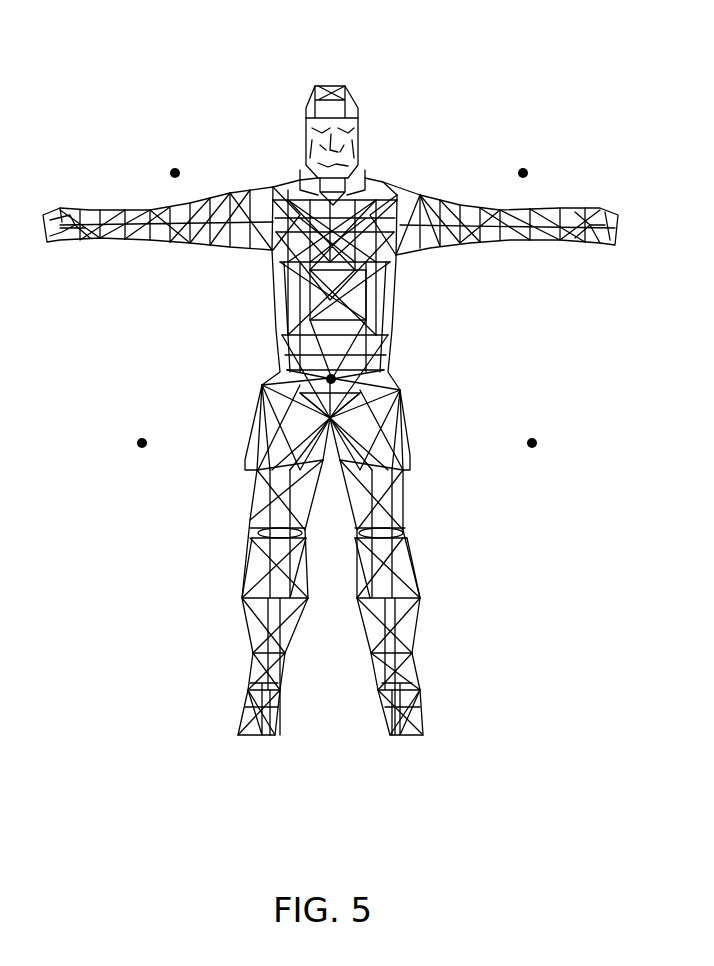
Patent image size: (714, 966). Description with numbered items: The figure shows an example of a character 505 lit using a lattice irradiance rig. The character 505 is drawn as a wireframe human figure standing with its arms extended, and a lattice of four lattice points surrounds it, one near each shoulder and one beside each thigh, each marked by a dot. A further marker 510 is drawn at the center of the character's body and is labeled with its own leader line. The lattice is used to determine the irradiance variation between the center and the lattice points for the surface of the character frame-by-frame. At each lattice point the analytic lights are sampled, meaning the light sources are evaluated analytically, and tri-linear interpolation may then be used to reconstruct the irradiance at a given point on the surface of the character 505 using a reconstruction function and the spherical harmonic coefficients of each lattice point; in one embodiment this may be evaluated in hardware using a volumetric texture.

The character 505 is at (333, 85).
The hip/root joint marker of human model 510 is at (337, 378).